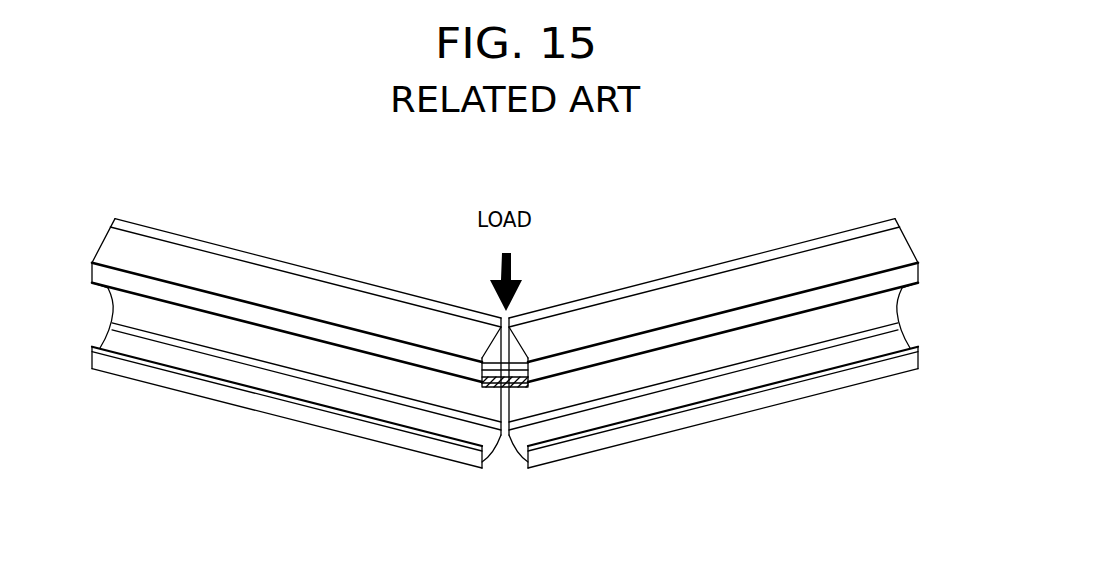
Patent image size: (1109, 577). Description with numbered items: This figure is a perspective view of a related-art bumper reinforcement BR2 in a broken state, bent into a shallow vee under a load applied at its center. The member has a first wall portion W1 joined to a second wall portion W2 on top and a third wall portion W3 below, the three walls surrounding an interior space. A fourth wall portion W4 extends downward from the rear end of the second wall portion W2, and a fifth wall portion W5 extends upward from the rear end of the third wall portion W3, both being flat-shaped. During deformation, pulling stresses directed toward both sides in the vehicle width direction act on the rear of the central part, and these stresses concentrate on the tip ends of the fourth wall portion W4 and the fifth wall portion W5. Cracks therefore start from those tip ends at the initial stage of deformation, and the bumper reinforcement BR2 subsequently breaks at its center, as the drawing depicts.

The bumper reinforcement BR2 is at (598, 190).
The first wall portion W1 is at (888, 310).
The second wall portion W2 is at (888, 240).
The third wall portion W3 is at (518, 437).
The fourth wall portion W4 is at (902, 283).
The fifth wall portion W5 is at (893, 370).